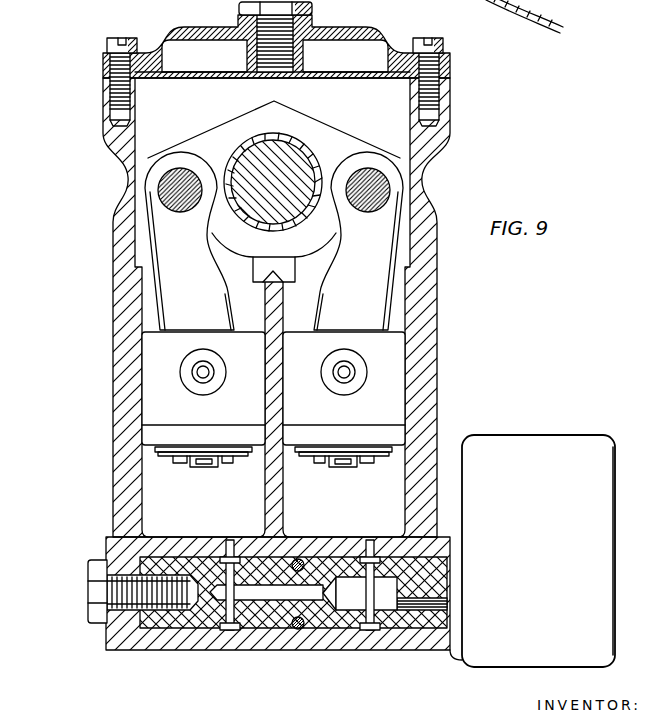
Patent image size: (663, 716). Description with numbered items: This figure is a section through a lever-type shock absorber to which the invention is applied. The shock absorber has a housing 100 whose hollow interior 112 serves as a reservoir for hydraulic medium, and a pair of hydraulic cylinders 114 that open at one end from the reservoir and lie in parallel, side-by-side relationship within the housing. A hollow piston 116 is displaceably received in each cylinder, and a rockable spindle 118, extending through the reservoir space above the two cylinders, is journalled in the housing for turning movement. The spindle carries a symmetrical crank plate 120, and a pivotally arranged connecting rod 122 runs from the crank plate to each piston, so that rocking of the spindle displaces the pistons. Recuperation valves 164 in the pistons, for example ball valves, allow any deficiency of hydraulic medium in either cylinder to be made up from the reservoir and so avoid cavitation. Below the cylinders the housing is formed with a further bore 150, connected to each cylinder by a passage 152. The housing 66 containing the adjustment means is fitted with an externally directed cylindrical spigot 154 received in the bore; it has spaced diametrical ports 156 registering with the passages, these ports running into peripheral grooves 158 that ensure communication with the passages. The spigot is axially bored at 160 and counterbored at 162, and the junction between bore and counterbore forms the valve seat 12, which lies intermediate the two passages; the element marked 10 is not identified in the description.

The housing 100 is at (125, 311).
The hollow interior 112 is at (386, 108).
The hydraulic cylinders 114 is at (152, 518).
The hollow piston 116 is at (173, 417).
The rockable spindle 118 is at (255, 167).
The crank plate 120 is at (205, 142).
The connecting rod 122 is at (337, 313).
The recuperation valves 164 is at (195, 467).
The cylindrical spigot 154 is at (162, 620).
The axial bore 160 is at (287, 596).
The valve seat 12 is at (318, 578).
The nozzle body 10 is at (366, 593).
The counterbore 162 is at (388, 568).
The bore 150 is at (137, 620).
The passage 152 is at (231, 540).
The diametrical ports 156 is at (231, 615).
The peripheral grooves 158 is at (228, 632).
The housing 66 is at (538, 557).